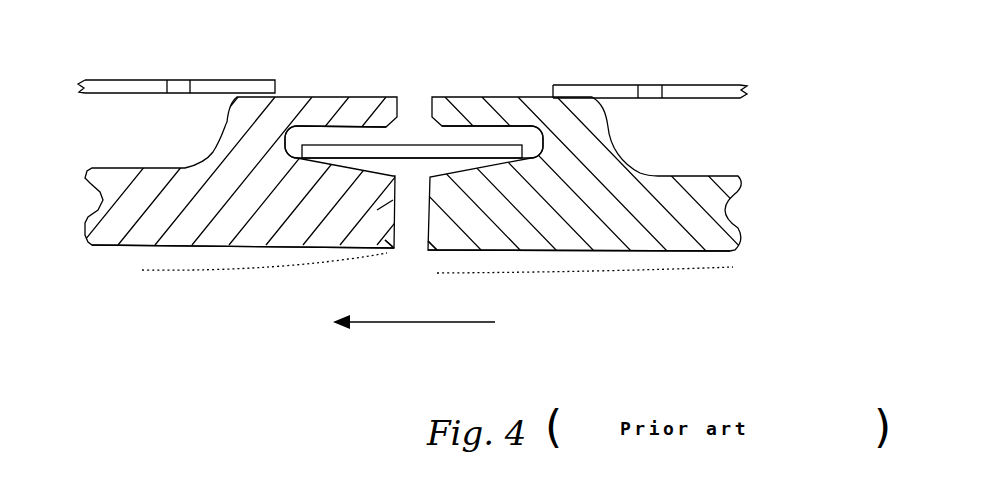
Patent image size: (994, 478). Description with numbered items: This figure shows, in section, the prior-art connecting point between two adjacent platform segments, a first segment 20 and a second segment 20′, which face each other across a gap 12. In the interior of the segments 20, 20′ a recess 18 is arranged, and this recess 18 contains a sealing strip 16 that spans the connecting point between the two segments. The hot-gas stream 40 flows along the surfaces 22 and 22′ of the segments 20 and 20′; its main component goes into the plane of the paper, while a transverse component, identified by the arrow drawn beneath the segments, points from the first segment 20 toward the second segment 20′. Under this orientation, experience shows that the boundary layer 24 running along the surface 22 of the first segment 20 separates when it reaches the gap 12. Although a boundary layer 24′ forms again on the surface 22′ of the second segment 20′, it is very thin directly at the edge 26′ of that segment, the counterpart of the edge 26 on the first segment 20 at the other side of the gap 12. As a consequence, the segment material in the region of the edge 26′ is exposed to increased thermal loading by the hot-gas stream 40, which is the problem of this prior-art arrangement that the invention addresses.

The gap 12 is at (412, 213).
The sealing strip 16 is at (407, 155).
The recess 18 is at (345, 133).
The first segment 20 is at (670, 181).
The second segment 20′ is at (142, 172).
The surface of first segment 22 is at (712, 254).
The surface of second segment 22′ is at (112, 247).
The boundary layer 24 is at (622, 262).
The re-formed boundary layer 24′ is at (218, 262).
The edge of first segment 26 is at (435, 247).
The edge of second segment 26′ is at (392, 248).
The hot-gas stream 40 is at (414, 336).